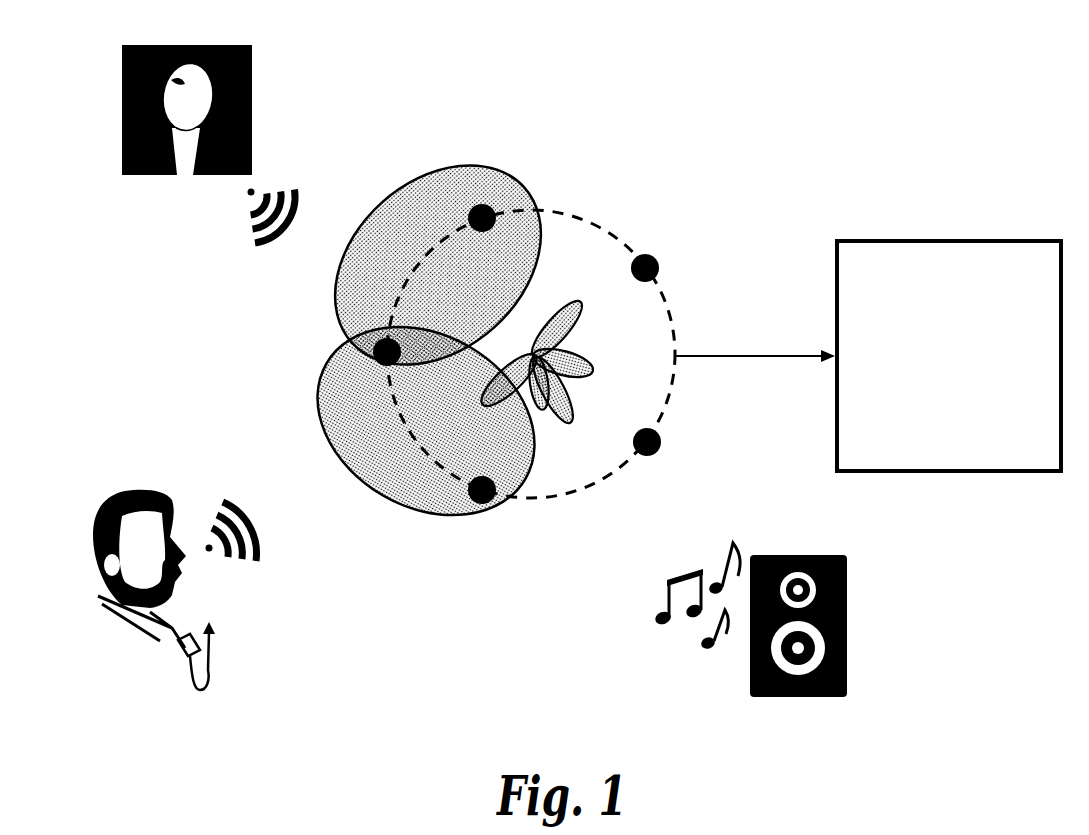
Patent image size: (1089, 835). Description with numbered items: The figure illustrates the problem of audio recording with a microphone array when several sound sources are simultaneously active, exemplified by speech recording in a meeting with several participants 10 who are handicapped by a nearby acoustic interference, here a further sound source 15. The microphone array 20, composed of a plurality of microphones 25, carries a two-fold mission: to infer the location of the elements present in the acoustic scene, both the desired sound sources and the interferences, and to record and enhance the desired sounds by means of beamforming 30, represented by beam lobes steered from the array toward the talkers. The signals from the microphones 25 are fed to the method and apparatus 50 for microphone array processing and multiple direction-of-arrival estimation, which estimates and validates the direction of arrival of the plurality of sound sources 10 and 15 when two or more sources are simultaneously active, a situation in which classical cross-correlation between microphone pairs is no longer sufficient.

The participants 10 is at (152, 177).
The sound source 15 is at (773, 558).
The microphone array 20 is at (559, 217).
The microphones 25 is at (648, 258).
The beamforming 30 is at (421, 171).
The method and apparatus 50 is at (939, 239).